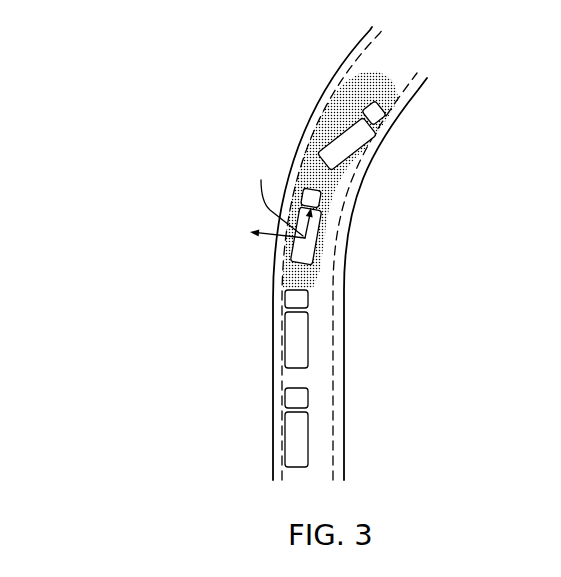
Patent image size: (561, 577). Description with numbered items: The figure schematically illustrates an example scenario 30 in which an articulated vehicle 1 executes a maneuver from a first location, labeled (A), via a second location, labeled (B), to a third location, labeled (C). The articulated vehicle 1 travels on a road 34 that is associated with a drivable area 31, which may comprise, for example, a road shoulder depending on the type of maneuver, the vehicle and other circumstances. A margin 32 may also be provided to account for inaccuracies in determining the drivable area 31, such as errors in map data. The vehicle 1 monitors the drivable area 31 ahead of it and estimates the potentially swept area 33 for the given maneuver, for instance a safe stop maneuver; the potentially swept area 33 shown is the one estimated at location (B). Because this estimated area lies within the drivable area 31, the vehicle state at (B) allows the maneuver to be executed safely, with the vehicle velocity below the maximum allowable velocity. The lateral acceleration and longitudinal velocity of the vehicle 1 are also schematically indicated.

The example scenario 30 is at (90, 51).
The drivable area 31 is at (389, 253).
The margin 32 is at (280, 264).
The potentially swept area 33 is at (347, 88).
The road 34 is at (366, 200).
The articulated vehicle 1 is at (300, 430).